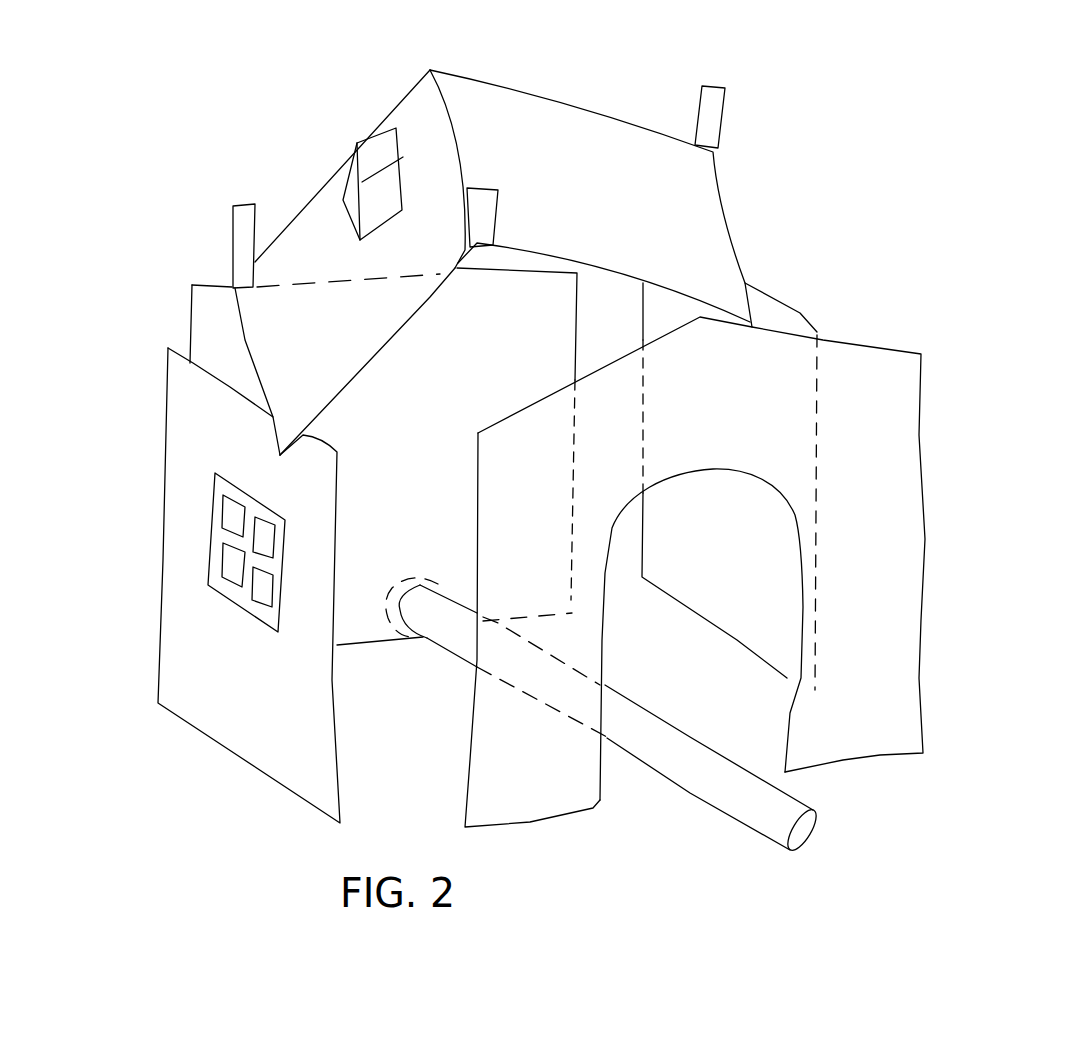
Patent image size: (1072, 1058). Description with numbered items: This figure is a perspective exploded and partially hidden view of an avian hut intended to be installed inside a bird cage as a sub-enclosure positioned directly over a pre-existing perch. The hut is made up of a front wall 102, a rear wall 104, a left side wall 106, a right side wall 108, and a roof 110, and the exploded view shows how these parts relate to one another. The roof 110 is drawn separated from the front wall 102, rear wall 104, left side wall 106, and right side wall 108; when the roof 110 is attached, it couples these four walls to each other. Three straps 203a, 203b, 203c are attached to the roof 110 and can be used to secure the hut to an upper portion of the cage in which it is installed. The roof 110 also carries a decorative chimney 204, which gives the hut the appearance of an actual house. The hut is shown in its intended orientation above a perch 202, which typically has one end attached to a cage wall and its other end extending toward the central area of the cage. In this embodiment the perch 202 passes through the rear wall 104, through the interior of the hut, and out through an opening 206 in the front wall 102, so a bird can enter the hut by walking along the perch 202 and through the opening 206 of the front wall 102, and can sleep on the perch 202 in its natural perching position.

The front wall 102 is at (746, 572).
The rear wall 104 is at (438, 415).
The left side wall 106 is at (185, 665).
The right side wall 108 is at (798, 313).
The roof 110 is at (573, 116).
The perch 202 is at (750, 805).
The strap 203a is at (237, 223).
The strap 203b is at (490, 207).
The strap 203c is at (713, 120).
The decorative chimney 204 is at (360, 178).
The opening 206 is at (748, 477).